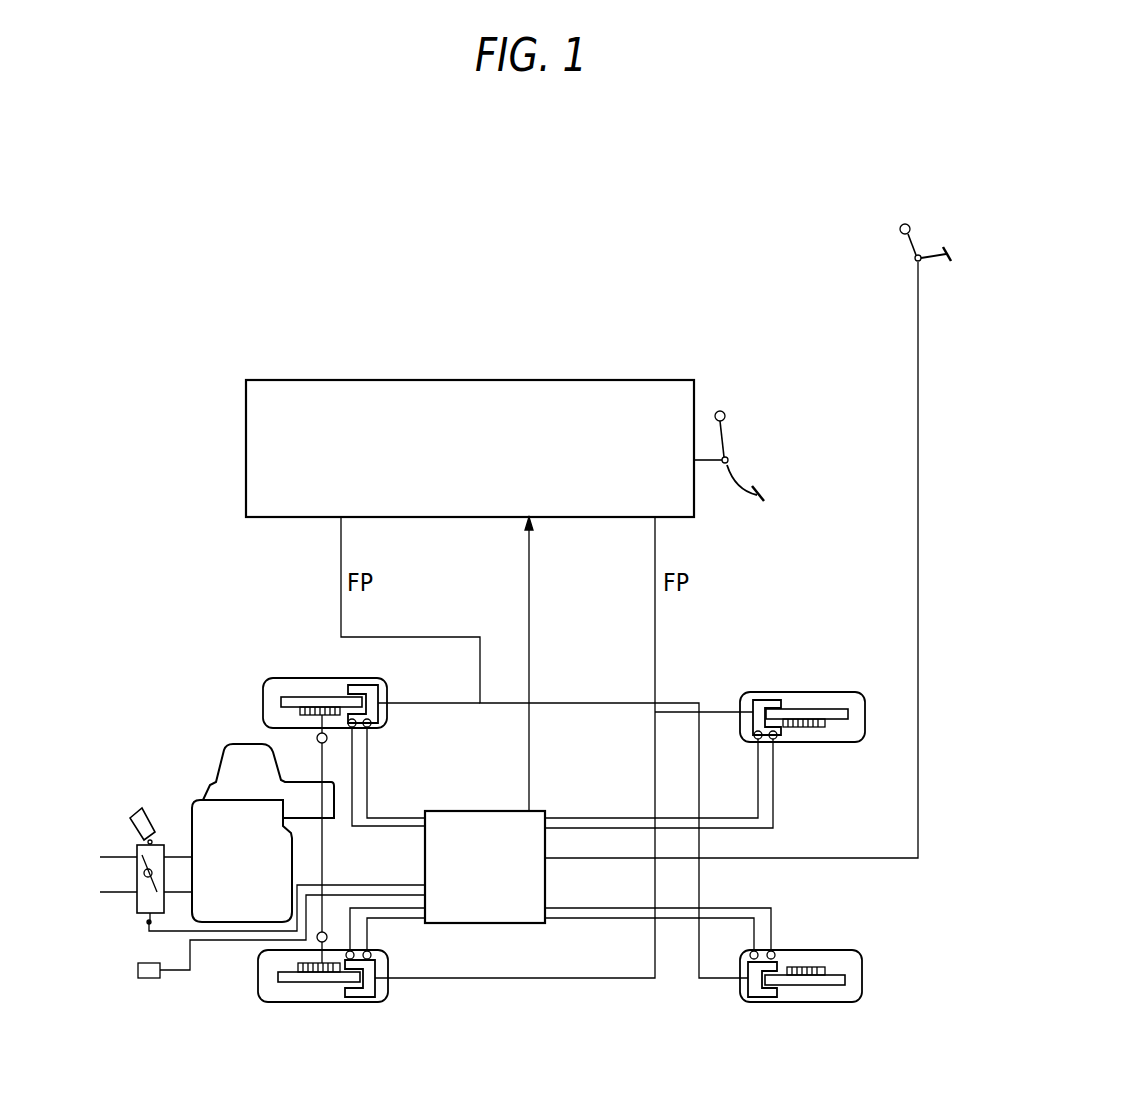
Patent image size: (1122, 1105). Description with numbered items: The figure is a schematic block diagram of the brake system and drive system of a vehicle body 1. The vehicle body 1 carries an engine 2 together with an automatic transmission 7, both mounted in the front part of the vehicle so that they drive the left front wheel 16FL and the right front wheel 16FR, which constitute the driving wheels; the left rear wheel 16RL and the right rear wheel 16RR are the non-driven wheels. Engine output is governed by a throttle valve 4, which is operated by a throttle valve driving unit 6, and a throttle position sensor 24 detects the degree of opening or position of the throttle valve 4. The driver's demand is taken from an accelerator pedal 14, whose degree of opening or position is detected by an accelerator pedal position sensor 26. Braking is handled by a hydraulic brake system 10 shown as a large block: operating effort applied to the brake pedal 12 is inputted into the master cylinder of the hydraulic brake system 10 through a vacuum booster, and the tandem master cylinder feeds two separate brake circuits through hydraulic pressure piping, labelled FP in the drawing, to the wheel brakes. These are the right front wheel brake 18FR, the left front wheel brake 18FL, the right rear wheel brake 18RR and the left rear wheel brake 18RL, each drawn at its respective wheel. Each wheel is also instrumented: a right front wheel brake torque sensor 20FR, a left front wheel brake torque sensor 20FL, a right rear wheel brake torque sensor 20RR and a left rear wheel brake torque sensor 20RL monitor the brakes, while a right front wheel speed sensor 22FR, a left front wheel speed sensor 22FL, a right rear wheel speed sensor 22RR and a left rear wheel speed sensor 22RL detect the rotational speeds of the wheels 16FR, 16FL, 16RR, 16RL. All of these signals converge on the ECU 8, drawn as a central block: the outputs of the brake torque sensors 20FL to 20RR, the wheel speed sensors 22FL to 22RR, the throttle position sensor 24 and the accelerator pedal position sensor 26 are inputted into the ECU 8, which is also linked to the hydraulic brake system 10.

The vehicle body 1 is at (576, 280).
The engine 2 is at (226, 924).
The throttle valve 4 is at (140, 848).
The throttle valve driving unit 6 is at (150, 980).
The automatic transmission 7 is at (228, 768).
The ECU 8 is at (478, 811).
The hydraulic brake system 10 is at (443, 380).
The brake pedal 12 is at (758, 502).
The accelerator pedal 14 is at (910, 236).
The right front wheel 16FR is at (262, 694).
The left front wheel 16FL is at (328, 1003).
The right rear wheel 16RR is at (808, 692).
The left rear wheel 16RL is at (845, 950).
The right front wheel brake 18FR is at (408, 678).
The left front wheel brake 18FL is at (370, 995).
The right rear wheel brake 18RR is at (756, 702).
The left rear wheel brake 18RL is at (772, 995).
The right front wheel brake torque sensor 20FR is at (372, 730).
The left front wheel brake torque sensor 20FL is at (372, 952).
The right rear wheel brake torque sensor 20RR is at (760, 740).
The left rear wheel brake torque sensor 20RL is at (752, 958).
The right front wheel speed sensor 22FR is at (355, 730).
The left front wheel speed sensor 22FL is at (350, 950).
The right rear wheel speed sensor 22RR is at (776, 740).
The left rear wheel speed sensor 22RL is at (773, 950).
The throttle position sensor 24 is at (148, 924).
The accelerator pedal position sensor 26 is at (915, 262).